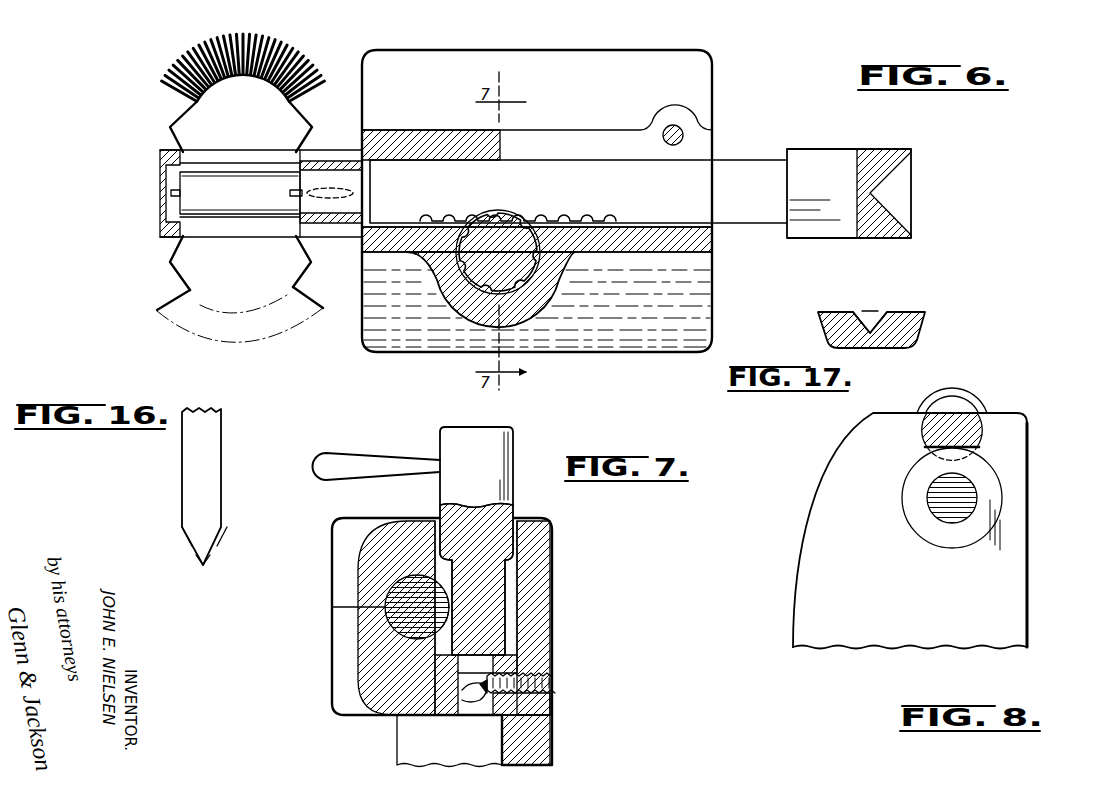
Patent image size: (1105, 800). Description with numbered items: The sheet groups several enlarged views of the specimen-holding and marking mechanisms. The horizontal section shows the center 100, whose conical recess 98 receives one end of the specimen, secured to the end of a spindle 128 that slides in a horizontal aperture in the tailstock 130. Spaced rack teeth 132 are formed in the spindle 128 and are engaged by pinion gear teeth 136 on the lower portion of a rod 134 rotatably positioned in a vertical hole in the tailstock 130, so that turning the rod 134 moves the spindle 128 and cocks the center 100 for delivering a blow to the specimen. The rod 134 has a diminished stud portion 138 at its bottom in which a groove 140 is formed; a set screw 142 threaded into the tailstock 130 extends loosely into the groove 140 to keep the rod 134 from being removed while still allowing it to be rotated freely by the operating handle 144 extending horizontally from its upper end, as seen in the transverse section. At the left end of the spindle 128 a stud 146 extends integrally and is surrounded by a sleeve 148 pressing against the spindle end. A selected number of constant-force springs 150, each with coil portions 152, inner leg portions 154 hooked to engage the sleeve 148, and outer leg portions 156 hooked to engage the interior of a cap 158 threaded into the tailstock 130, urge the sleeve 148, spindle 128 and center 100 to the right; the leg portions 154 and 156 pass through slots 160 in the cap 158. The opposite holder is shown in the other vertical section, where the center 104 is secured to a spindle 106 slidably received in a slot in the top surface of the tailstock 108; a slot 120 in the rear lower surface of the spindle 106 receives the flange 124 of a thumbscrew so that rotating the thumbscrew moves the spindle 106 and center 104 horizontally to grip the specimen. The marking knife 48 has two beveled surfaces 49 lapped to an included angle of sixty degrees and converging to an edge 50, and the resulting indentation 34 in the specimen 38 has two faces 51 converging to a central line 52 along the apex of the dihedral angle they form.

In FIG. 6, the constant-force springs 150 is at (160, 51).
In FIG. 6, the coil portions 152 is at (289, 58).
In FIG. 6, the inner leg portions 154 is at (303, 138).
In FIG. 6, the outer leg portions 156 is at (178, 119).
In FIG. 6, the sleeve 148 is at (325, 160).
In FIG. 6, the cap 158 is at (162, 194).
In FIG. 6, the slots 160 is at (185, 198).
In FIG. 6, the stud 146 is at (364, 190).
In FIG. 6, the rack teeth 132 is at (440, 214).
In FIG. 6, the spindle 128 is at (735, 175).
In FIG. 6, the center 100 is at (828, 155).
In FIG. 6, the conical recess 98 is at (903, 205).
In FIG. 6, the tailstock 130 is at (700, 283).
In FIG. 7, the tailstock 130 is at (540, 629).
In FIG. 6, the rod 134 is at (497, 262).
In FIG. 7, the rod 134 is at (485, 492).
In FIG. 6, the pinion gear teeth 136 is at (527, 240).
In FIG. 17, the indentation 34 is at (863, 284).
In FIG. 17, the faces 51 is at (866, 311).
In FIG. 17, the central line 52 is at (872, 325).
In FIG. 17, the workpiece 38 is at (913, 312).
In FIG. 8, the center 104 is at (958, 393).
In FIG. 8, the spindle 106 is at (980, 426).
In FIG. 8, the slot 120 is at (987, 449).
In FIG. 8, the flange 124 is at (989, 512).
In FIG. 8, the tailstock 108 is at (815, 554).
In FIG. 7, the operating handle 144 is at (357, 466).
In FIG. 7, the set screw 142 is at (522, 676).
In FIG. 7, the stud portion 138 is at (488, 706).
In FIG. 7, the groove 140 is at (470, 700).
In FIG. 16, the marking knife 48 is at (208, 462).
In FIG. 16, the beveled surfaces 49 is at (185, 540).
In FIG. 16, the edge 50 is at (203, 567).